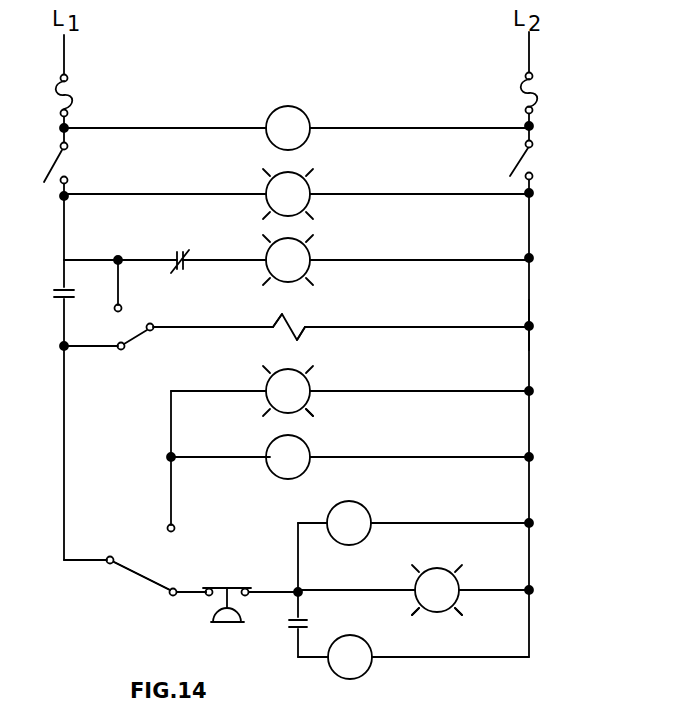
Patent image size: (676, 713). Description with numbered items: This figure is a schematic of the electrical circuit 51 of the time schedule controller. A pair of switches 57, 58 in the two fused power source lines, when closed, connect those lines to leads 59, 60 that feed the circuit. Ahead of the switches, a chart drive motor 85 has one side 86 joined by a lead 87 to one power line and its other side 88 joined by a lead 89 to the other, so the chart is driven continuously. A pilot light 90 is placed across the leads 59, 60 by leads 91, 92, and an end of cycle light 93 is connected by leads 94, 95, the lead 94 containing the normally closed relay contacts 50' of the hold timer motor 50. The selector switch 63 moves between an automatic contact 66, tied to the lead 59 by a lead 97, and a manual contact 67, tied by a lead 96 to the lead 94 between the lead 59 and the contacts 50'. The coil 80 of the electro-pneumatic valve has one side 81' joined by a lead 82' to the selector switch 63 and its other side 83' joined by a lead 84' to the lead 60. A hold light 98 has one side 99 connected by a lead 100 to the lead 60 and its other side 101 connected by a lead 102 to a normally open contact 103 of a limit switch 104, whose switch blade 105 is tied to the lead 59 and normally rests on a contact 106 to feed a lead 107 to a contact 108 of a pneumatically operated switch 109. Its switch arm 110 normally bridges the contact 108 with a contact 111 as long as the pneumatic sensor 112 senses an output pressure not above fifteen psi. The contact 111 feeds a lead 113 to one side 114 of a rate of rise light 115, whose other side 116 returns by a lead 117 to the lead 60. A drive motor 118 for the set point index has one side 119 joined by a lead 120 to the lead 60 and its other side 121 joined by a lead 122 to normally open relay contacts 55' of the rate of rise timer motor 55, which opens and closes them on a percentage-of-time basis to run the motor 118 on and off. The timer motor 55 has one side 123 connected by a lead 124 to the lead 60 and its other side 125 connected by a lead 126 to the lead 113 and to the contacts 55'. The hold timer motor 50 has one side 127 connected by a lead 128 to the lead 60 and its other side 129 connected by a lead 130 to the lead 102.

The electrical circuit 51 is at (574, 340).
The switch 57 is at (79, 172).
The switch 58 is at (545, 159).
The lead 59 is at (63, 228).
The lead 60 is at (531, 232).
The chart drive motor 85 is at (303, 112).
The one side of chart drive motor 86 is at (268, 125).
The lead 87 is at (171, 128).
The other side of chart drive motor 88 is at (306, 132).
The lead 89 is at (391, 128).
The pilot light 90 is at (313, 186).
The lead 91 is at (165, 194).
The lead 92 is at (401, 194).
The end of cycle light 93 is at (313, 251).
The lead 94 is at (213, 260).
The lead 95 is at (423, 260).
The lead 96 is at (122, 281).
The contact 67 is at (123, 306).
The normally closed relay contacts 50' is at (205, 239).
The hold timer motor 50 is at (250, 428).
The selector switch 63 is at (144, 346).
The contact 66 is at (119, 350).
The lead 97 is at (93, 348).
The coil 80 is at (296, 318).
The one side of coil 81' is at (262, 337).
The lead 82' is at (213, 309).
The other side of coil 83' is at (331, 343).
The lead 84' is at (417, 306).
The hold light 98 is at (313, 382).
The one side of hold light 99 is at (311, 397).
The lead 100 is at (433, 391).
The other side of hold light 101 is at (269, 385).
The lead 102 is at (171, 428).
The normally open contact 103 is at (168, 524).
The limit switch 104 is at (143, 603).
The switch blade 105 is at (136, 572).
The contact 106 is at (172, 598).
The lead 107 is at (190, 590).
The contact 108 is at (208, 598).
The pneumatically operated switch 109 is at (244, 576).
The switch arm 110 is at (216, 590).
The contact 111 is at (248, 596).
The pneumatic sensor 112 is at (230, 626).
The lead 113 is at (370, 590).
The one side of rate of rise light 114 is at (420, 600).
The rate of rise light 115 is at (448, 570).
The other side of rate of rise light 116 is at (456, 600).
The lead 117 is at (483, 590).
The drive motor 118 is at (366, 674).
The one side of drive motor 119 is at (373, 656).
The lead 120 is at (465, 657).
The other side of drive motor 121 is at (336, 670).
The lead 122 is at (326, 650).
The one side of rate of rise timer motor 123 is at (373, 522).
The lead 124 is at (448, 523).
The other side of rate of rise timer motor 125 is at (330, 518).
The lead 126 is at (300, 558).
The one side of hold timer motor 127 is at (311, 453).
The lead 128 is at (419, 457).
The other side of hold timer motor 129 is at (270, 450).
The lead 130 is at (213, 460).
The rate of rise timer motor 55 is at (367, 508).
The normally open relay contacts 55' is at (324, 613).